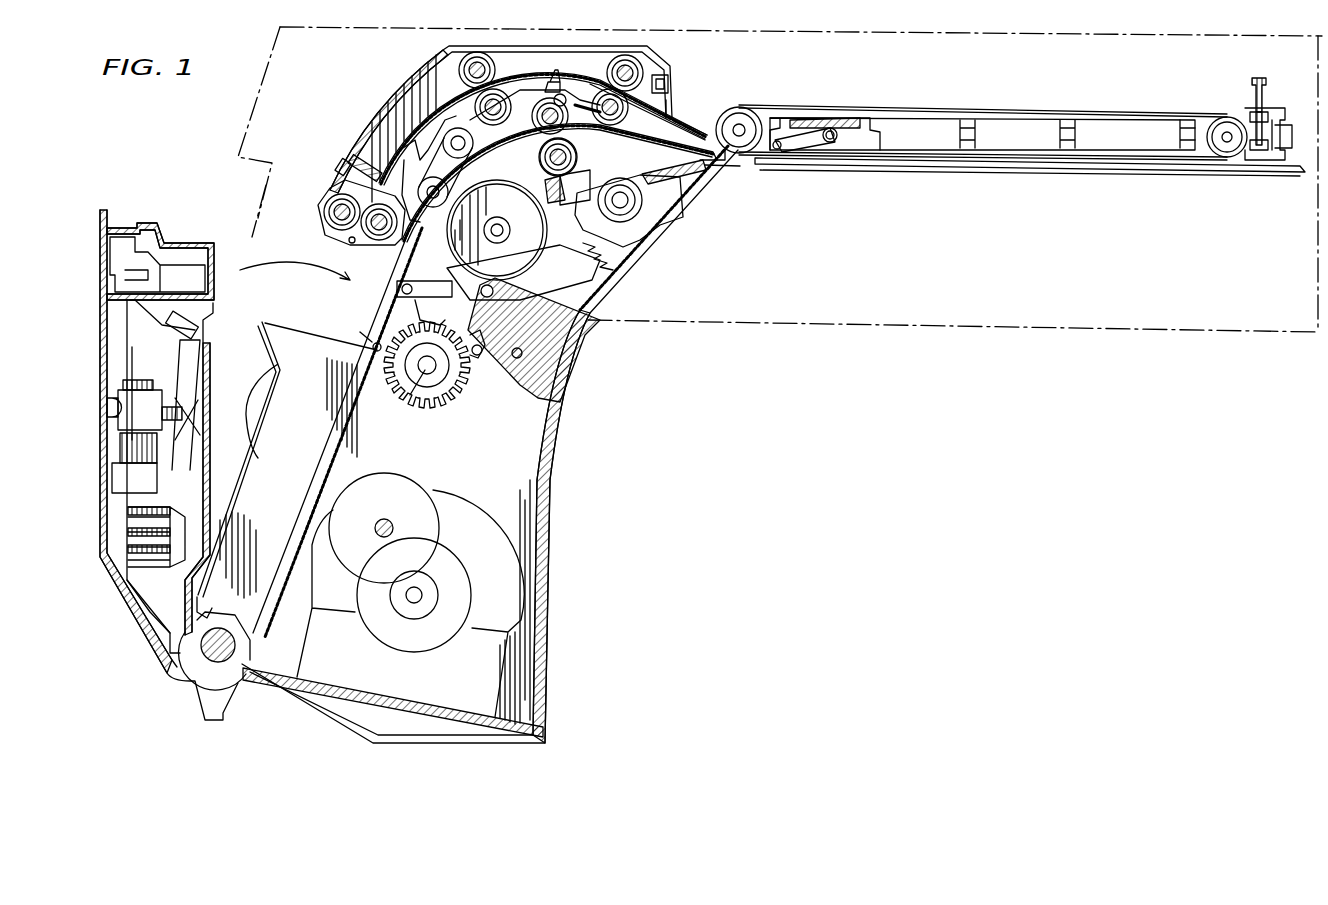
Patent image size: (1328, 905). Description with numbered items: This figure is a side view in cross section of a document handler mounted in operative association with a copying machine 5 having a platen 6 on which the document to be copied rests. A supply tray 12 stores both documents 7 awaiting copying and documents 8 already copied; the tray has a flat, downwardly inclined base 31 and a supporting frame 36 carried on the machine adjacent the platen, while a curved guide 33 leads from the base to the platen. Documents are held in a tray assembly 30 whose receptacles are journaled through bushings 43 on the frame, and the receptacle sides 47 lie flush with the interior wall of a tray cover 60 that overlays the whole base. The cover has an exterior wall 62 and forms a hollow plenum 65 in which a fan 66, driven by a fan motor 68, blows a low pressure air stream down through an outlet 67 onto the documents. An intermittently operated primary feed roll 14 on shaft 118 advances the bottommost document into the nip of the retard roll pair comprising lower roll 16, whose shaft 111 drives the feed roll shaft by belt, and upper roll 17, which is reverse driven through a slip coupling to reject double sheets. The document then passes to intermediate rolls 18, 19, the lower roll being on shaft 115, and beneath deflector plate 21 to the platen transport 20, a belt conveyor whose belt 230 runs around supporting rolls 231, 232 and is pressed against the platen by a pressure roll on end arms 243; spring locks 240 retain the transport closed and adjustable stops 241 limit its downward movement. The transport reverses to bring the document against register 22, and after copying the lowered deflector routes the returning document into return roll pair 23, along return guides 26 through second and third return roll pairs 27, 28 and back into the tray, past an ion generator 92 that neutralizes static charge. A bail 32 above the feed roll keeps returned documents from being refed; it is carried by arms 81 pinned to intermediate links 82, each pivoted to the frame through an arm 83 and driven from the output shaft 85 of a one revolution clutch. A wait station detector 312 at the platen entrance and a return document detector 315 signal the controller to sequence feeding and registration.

The copying machine 5 is at (1058, 243).
The platen 6 is at (835, 165).
The documents to be copied 7 is at (330, 437).
The copied documents 8 is at (330, 383).
The supply tray 12 is at (178, 183).
The primary feed roll 14 is at (448, 400).
The lower retard roll 16 is at (585, 300).
The upper retard roll 17 is at (418, 185).
The lower intermediate transport roll 18 is at (540, 172).
The upper intermediate roll 19 is at (503, 104).
The platen transport 20 is at (1012, 136).
The deflector plate 21 is at (700, 122).
The register 22 is at (755, 168).
The return roll pair 23 is at (645, 65).
The return guides 26 is at (400, 102).
The second return roll pair 27 is at (460, 60).
The third return roll pair 28 is at (320, 213).
The tray assembly 30 is at (306, 326).
The base 31 is at (345, 448).
The bail 32 is at (372, 345).
The curved guide 33 is at (633, 193).
The frame 36 is at (534, 340).
The bushings 43 is at (238, 648).
The receptacle sides 47 is at (262, 318).
The tray cover 60 is at (72, 376).
The exterior wall 62 is at (133, 634).
The plenum 65 is at (120, 395).
The fan 66 is at (200, 360).
The outlet 67 is at (208, 455).
The fan motor 68 is at (135, 435).
The arms 81 is at (390, 306).
The intermediate links 82 is at (455, 268).
The arm 83 is at (478, 360).
The output shaft 85 is at (523, 353).
The ion generator 92 is at (360, 160).
The shaft 111 is at (523, 275).
The shaft 115 is at (552, 200).
The shaft 118 is at (410, 395).
The platen transport belt 230 is at (1060, 112).
The belt supporting roll 231 is at (745, 115).
The idler roll 232 is at (1222, 122).
The spring locks 240 is at (1285, 115).
The adjustable stops 241 is at (1258, 95).
The end arms 243 is at (812, 146).
The wait station detector 312 is at (589, 128).
The return document detector 315 is at (672, 82).